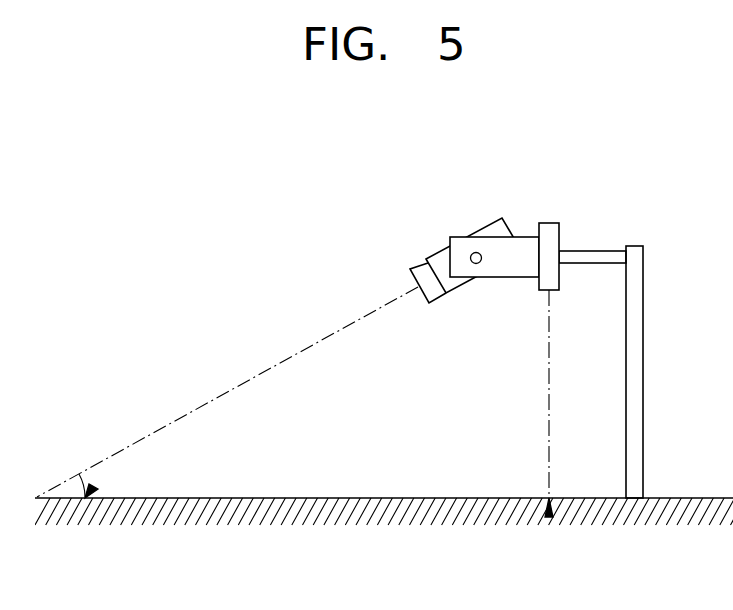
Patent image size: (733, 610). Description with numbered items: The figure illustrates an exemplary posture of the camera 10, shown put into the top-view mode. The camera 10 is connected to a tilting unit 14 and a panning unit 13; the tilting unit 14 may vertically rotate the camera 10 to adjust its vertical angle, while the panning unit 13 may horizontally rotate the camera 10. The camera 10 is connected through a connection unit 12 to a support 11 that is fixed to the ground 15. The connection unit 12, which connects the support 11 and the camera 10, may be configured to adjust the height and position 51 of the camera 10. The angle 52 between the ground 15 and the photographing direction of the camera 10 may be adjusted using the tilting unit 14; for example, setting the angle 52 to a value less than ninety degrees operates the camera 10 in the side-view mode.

The camera 10 is at (483, 224).
The support 11 is at (643, 400).
The connection unit 12 is at (593, 257).
The panning unit 13 is at (552, 222).
The tilting unit 14 is at (505, 272).
The ground 15 is at (505, 498).
The position 51 is at (549, 517).
The angle 52 is at (97, 494).